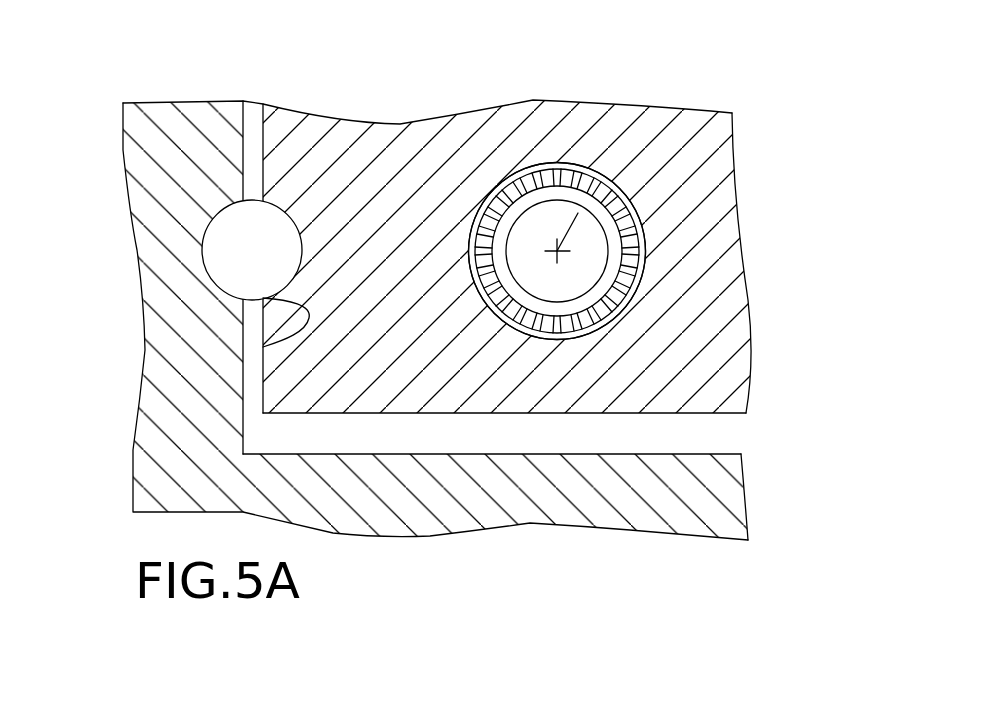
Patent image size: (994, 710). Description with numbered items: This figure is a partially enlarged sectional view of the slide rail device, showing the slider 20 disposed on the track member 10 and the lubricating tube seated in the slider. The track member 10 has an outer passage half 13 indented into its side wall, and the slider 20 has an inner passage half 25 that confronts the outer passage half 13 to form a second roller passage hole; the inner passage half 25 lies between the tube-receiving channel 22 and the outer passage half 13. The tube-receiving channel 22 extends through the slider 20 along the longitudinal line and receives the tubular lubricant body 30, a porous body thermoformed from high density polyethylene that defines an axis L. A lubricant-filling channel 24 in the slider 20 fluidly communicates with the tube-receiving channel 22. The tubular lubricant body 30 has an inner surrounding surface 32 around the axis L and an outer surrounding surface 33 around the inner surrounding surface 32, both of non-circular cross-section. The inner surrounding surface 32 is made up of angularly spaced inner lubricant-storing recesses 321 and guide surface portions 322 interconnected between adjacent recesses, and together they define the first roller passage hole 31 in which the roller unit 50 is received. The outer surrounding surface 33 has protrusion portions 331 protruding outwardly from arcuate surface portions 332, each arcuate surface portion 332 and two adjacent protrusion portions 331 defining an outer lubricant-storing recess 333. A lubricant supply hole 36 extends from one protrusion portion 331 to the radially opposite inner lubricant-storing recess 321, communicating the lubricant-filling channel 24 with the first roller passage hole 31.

The track member 10 is at (123, 182).
The outer passage half 13 is at (203, 247).
The slider 20 is at (287, 140).
The tube-receiving channel 22 is at (447, 300).
The lubricant-filling channel 24 is at (558, 118).
The inner passage half 25 is at (263, 347).
The tubular lubricant body 30 is at (575, 308).
The first roller passage hole 31 is at (625, 193).
The inner surrounding surface 32 is at (519, 210).
The outer surrounding surface 33 is at (619, 227).
The lubricant supply hole 36 is at (562, 173).
The roller unit 50 is at (590, 266).
The axis L is at (615, 135).
The inner lubricant-storing recess 321 is at (494, 234).
The guide surface portion 322 is at (501, 222).
The protrusion portion 331 is at (527, 189).
The arcuate surface portion 332 is at (506, 195).
The outer lubricant-storing recess 333 is at (507, 216).